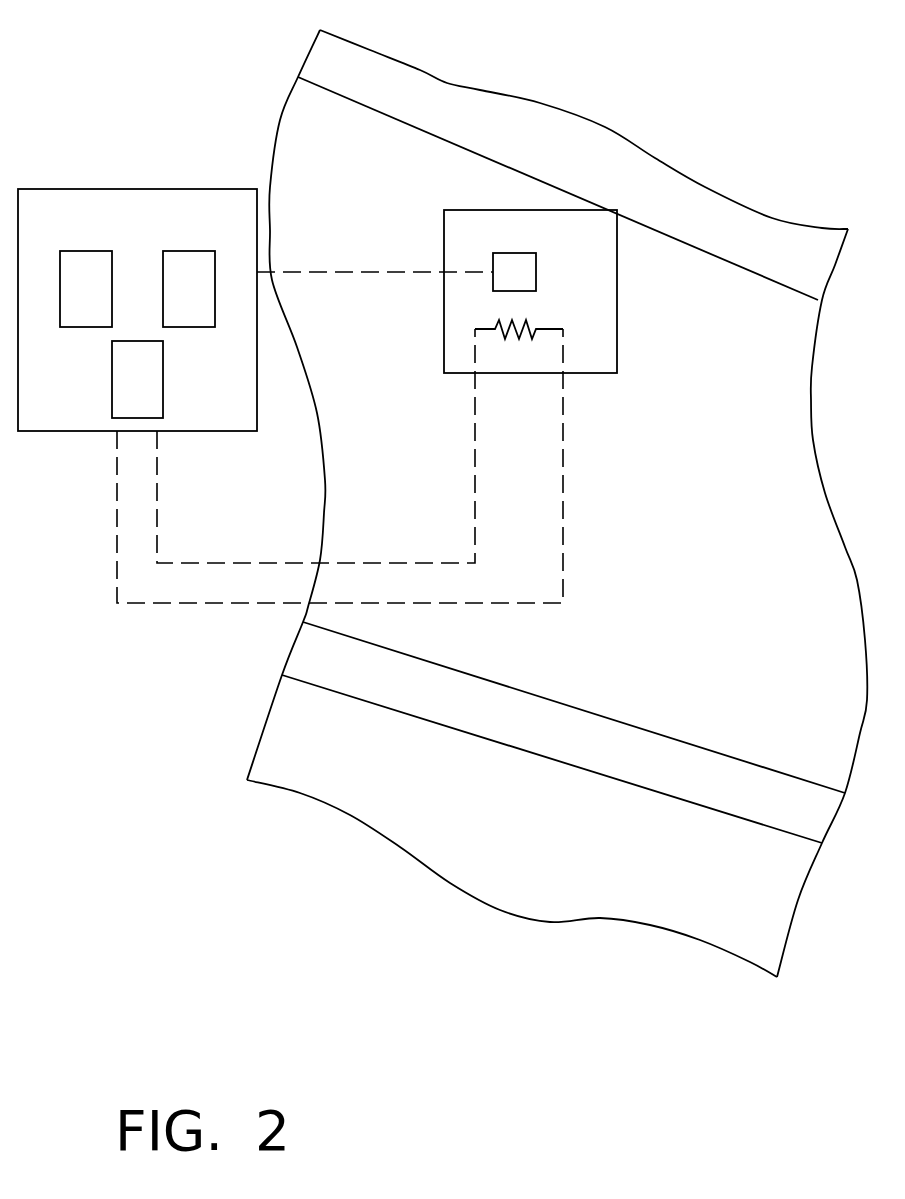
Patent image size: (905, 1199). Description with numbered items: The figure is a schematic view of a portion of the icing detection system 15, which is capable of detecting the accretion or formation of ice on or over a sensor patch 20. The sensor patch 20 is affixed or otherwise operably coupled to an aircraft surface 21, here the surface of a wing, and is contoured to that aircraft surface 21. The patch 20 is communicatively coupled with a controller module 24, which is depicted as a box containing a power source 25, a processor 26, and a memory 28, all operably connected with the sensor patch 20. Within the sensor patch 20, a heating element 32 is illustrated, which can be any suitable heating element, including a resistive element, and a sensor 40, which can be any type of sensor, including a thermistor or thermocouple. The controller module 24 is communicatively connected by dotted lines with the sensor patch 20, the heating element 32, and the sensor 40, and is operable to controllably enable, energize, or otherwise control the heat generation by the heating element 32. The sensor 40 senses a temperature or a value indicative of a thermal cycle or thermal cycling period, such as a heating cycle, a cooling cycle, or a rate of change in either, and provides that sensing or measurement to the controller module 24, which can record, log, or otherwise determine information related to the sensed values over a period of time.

The icing detection system 15 is at (680, 82).
The aircraft surface 21 is at (775, 472).
The controller module 24 is at (122, 303).
The processor 26 is at (68, 303).
The memory 28 is at (170, 303).
The power source 25 is at (137, 379).
The sensor patch 20 is at (606, 297).
The sensor 40 is at (498, 282).
The heating element 32 is at (530, 362).